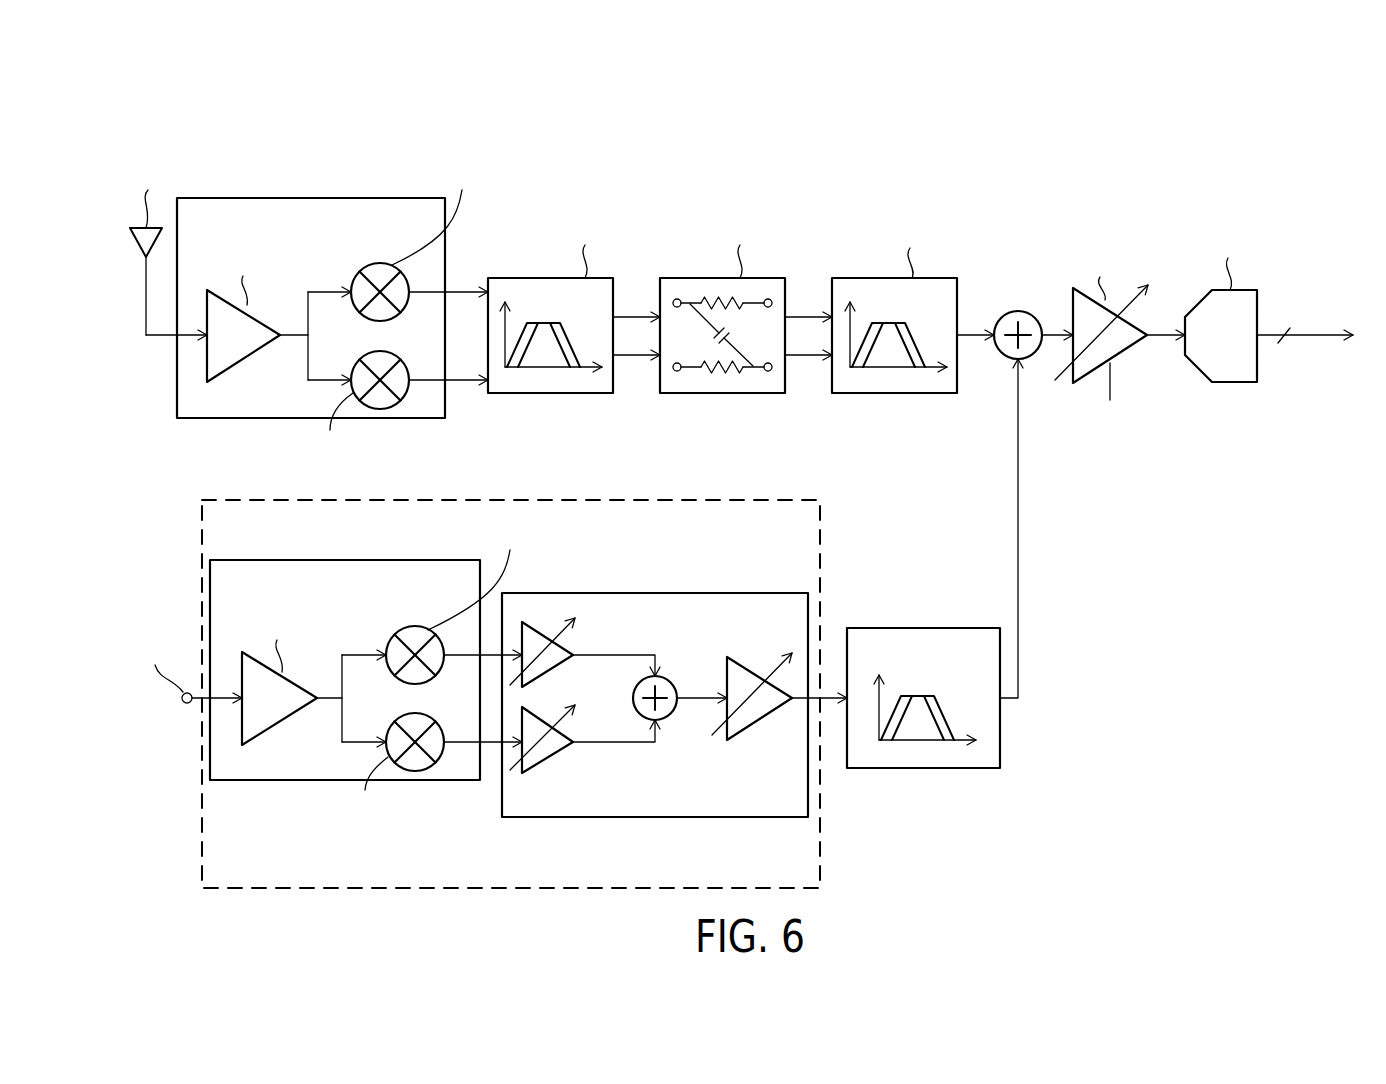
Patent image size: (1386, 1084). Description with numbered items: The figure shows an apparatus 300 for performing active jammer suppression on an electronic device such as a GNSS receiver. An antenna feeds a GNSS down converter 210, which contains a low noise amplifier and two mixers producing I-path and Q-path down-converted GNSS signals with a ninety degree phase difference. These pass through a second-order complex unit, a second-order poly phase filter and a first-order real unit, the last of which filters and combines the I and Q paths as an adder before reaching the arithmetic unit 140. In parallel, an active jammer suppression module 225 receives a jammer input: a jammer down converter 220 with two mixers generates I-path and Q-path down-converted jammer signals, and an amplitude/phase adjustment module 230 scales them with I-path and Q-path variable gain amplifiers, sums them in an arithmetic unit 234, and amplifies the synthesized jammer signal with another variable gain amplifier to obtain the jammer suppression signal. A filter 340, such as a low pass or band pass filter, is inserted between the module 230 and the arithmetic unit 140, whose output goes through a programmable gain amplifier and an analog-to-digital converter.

The apparatus 300 is at (739, 469).
The GNSS down converter 210 is at (313, 198).
The arithmetic unit 140 is at (1018, 311).
The active jammer suppression module 225 is at (603, 500).
The jammer down converter 220 is at (350, 560).
The amplitude/phase adjustment module 230 is at (655, 676).
The arithmetic unit 234 is at (670, 678).
The filter 340 is at (920, 628).